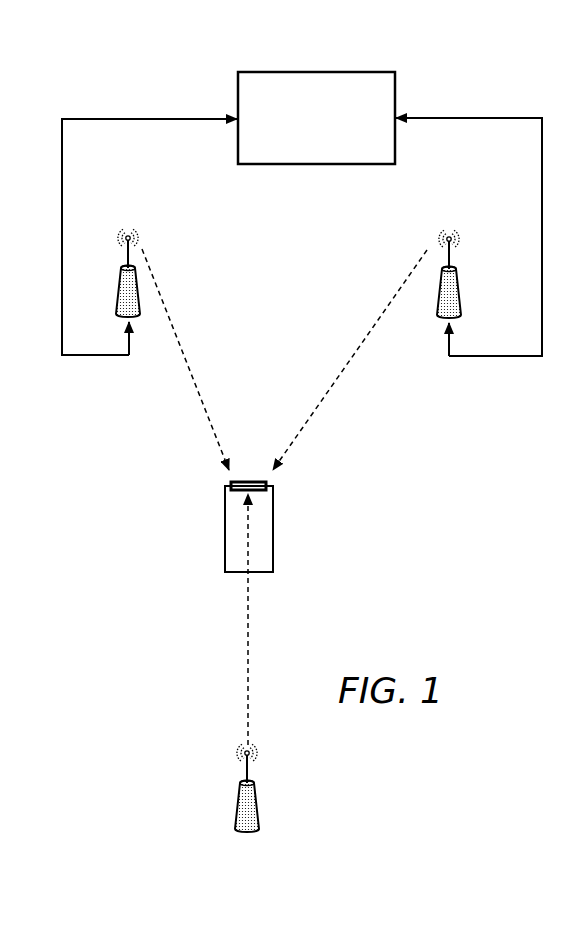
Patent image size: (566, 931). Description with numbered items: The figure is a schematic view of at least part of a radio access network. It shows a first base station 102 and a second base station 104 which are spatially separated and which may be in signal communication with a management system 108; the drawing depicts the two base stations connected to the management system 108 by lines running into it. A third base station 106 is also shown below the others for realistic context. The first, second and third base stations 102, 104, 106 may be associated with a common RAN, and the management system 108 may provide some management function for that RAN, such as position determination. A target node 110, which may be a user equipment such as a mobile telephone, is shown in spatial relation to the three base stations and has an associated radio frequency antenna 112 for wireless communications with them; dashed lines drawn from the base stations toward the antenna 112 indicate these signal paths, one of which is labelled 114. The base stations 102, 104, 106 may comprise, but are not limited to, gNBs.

The first base station 102 is at (460, 291).
The second base station 104 is at (122, 281).
The third base station 106 is at (238, 818).
The management system 108 is at (397, 87).
The target node 110 is at (225, 534).
The radio frequency antenna 112 is at (239, 481).
The signal path 114 is at (187, 345).